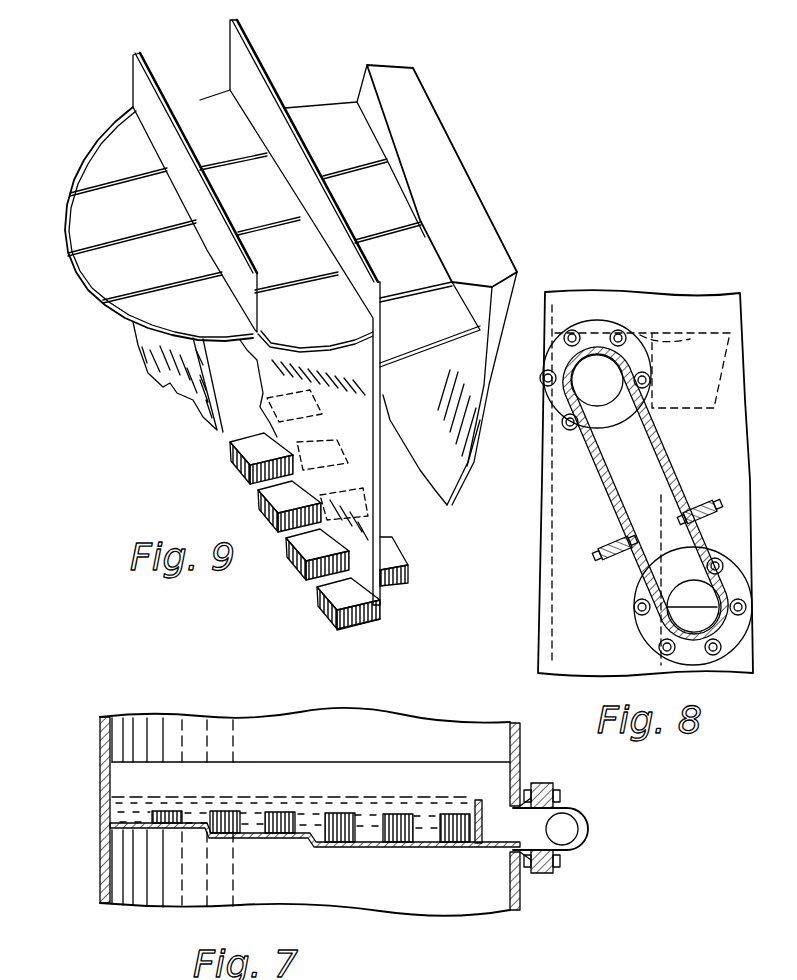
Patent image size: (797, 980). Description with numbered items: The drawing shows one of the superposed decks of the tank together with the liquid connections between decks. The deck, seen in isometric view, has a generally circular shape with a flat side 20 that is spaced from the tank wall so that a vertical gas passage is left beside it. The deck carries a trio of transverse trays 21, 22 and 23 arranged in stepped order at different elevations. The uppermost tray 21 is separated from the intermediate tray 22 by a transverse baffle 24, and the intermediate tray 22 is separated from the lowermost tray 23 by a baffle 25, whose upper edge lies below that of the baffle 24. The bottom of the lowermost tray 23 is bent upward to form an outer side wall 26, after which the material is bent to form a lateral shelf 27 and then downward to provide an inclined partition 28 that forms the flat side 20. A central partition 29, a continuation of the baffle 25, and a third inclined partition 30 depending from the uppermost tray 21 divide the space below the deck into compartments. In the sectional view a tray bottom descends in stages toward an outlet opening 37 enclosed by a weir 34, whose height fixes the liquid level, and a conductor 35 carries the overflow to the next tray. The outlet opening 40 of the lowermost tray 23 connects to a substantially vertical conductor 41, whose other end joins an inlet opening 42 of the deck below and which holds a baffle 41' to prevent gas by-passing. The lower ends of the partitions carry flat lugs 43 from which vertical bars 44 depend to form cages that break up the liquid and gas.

In FIG. 9, the flat side 20 is at (492, 207).
In FIG. 9, the uppermost tray 21 is at (90, 217).
In FIG. 9, the intermediate tray 22 is at (270, 183).
In FIG. 9, the lowermost tray 23 is at (378, 198).
In FIG. 9, the transverse baffle 24 is at (263, 287).
In FIG. 9, the baffle 25 is at (380, 288).
In FIG. 9, the outer side wall 26 is at (492, 310).
In FIG. 9, the shelf 27 is at (500, 258).
In FIG. 9, the inclined partition 28 is at (460, 407).
In FIG. 9, the central partition 29 is at (363, 473).
In FIG. 9, the third partition 30 is at (188, 403).
In FIG. 8, the weir 34 is at (668, 340).
In FIG. 7, the weir 34 is at (480, 800).
In FIG. 7, the conductor 35 is at (580, 826).
In FIG. 7, the outlet opening 37 is at (492, 847).
In FIG. 8, the outlet opening 40 is at (602, 350).
In FIG. 8, the vertical conductor 41 is at (645, 493).
In FIG. 8, the baffle 41' is at (653, 550).
In FIG. 8, the inlet opening 42 is at (663, 627).
In FIG. 9, the flat lugs 43 is at (357, 598).
In FIG. 7, the flat lugs 43 is at (341, 811).
In FIG. 9, the vertical bars 44 is at (363, 628).